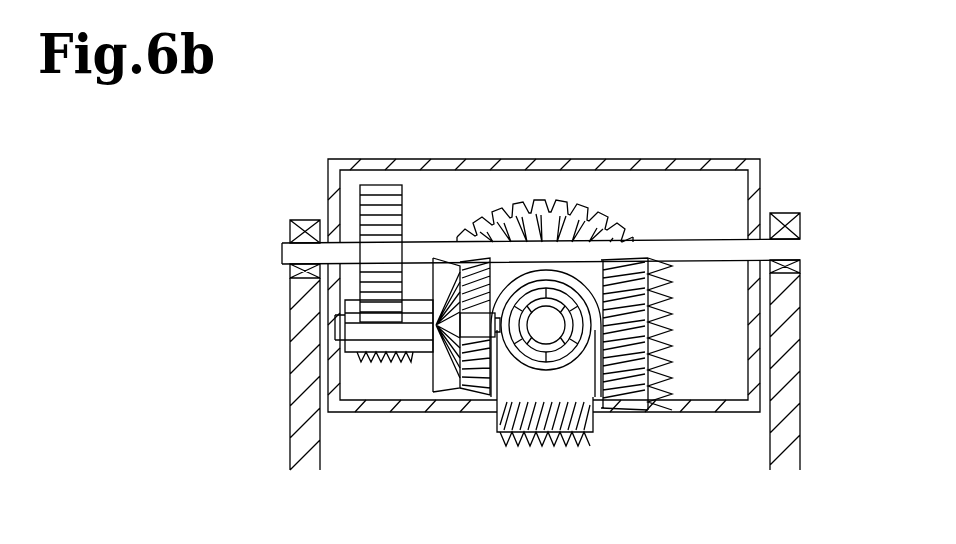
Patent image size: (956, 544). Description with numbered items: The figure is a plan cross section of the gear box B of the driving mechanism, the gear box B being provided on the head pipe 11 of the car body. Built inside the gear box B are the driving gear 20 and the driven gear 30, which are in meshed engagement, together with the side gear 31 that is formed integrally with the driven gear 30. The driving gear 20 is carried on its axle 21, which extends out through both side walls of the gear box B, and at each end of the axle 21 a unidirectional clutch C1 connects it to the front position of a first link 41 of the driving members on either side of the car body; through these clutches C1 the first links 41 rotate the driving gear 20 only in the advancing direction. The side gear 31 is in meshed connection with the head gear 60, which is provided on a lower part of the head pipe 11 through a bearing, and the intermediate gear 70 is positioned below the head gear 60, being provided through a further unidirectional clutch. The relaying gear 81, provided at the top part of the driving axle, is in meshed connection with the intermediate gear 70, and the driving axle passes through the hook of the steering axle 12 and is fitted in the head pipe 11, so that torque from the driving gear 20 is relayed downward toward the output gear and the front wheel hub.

The gear box B is at (706, 164).
The driving gear 20 is at (385, 195).
The axle 21 is at (298, 255).
The unidirectional clutch C1 is at (292, 232).
The driven gear 30 is at (355, 346).
The side gear 31 is at (432, 367).
The first link 41 is at (300, 430).
The relaying gear 81 is at (394, 366).
The steering axle 12 is at (498, 435).
The head pipe 11 is at (548, 345).
The head gear 60 is at (525, 443).
The intermediate gear 70 is at (587, 430).